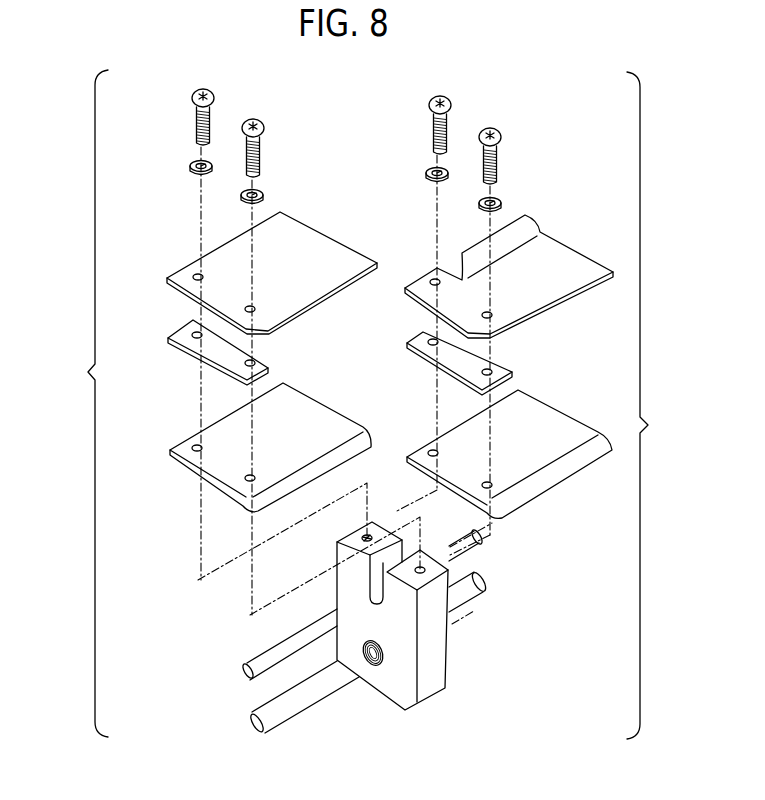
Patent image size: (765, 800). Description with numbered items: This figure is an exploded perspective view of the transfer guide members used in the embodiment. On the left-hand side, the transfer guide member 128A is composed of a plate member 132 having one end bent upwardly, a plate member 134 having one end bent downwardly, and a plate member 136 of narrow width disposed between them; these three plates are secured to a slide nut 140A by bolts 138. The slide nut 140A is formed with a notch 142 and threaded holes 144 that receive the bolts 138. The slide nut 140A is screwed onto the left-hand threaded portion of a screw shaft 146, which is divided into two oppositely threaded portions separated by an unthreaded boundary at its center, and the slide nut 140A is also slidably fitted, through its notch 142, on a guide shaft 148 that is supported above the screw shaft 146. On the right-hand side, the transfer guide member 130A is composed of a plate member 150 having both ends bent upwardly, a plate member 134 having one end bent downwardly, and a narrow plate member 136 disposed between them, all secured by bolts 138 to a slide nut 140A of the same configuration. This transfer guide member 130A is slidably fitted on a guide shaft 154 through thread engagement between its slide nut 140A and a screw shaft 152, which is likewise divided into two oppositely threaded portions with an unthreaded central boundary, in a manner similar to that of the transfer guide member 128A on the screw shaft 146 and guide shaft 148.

The transfer guide member 128A is at (73, 403).
The transfer guide member 130A is at (662, 405).
The plate member 132 is at (182, 277).
The plate member 134 is at (185, 452).
The plate member 136 is at (186, 341).
The bolts 138 is at (197, 115).
The slide nut 140A is at (391, 634).
The notch 142 is at (375, 568).
The threaded holes 144 is at (378, 656).
The screw shaft 146 is at (368, 685).
The guide shaft 148 is at (323, 624).
The plate member 150 is at (566, 260).
The screw shaft 152 is at (295, 717).
The guide shaft 154 is at (247, 664).